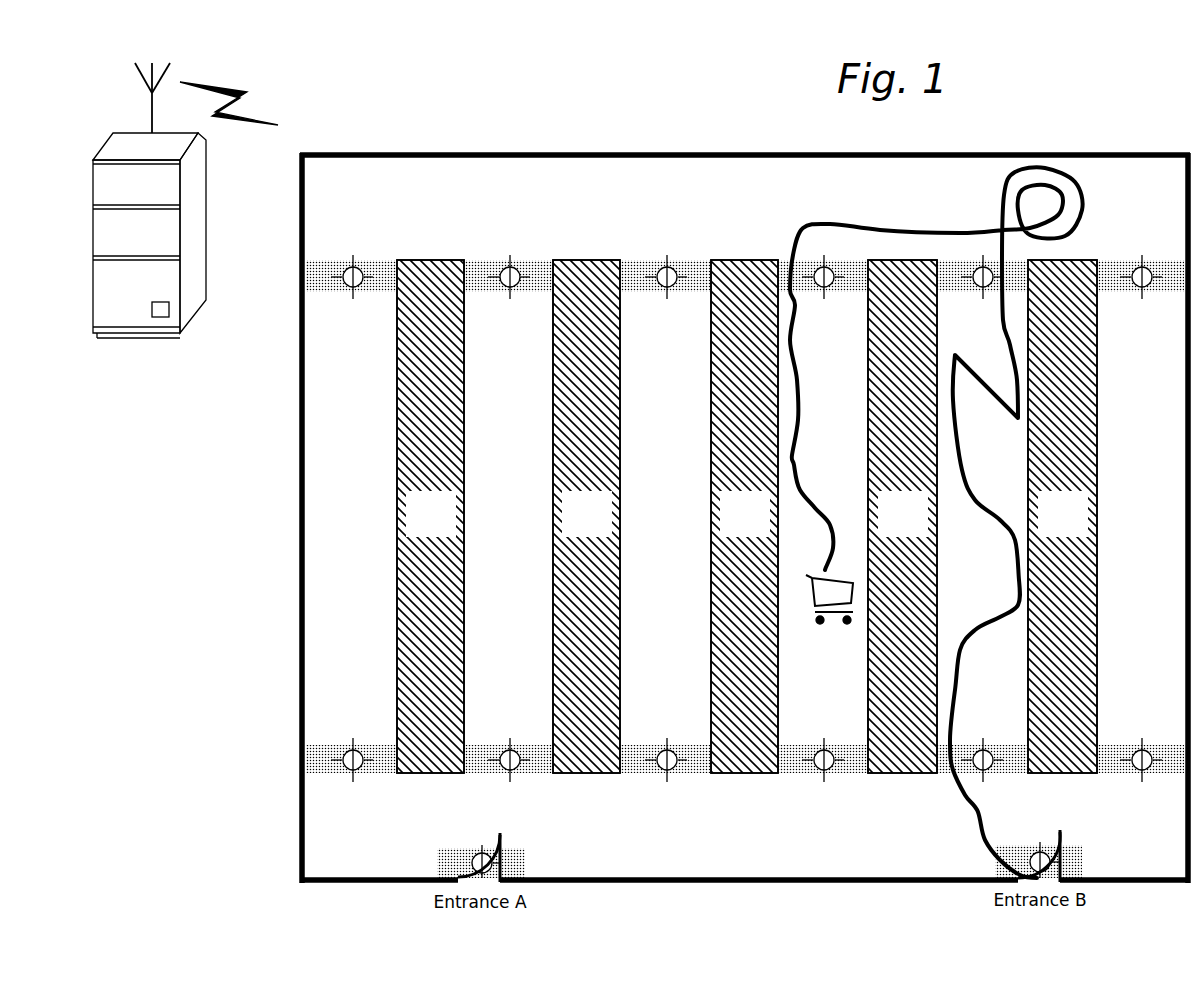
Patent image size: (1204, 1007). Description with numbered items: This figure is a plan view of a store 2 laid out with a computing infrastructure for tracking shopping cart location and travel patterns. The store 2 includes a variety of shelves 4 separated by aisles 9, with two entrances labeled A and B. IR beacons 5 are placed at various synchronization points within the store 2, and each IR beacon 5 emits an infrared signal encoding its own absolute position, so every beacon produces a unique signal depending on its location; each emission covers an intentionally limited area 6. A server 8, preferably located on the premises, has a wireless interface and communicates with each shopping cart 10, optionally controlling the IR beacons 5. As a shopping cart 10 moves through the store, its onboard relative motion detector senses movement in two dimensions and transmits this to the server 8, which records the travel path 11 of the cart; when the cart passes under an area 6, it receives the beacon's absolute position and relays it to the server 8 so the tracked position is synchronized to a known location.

The store 2 is at (300, 623).
The shelves 4 is at (747, 516).
The IR beacon 5 is at (746, 566).
The area 6 is at (745, 569).
The server 8 is at (192, 280).
The aisles 9 is at (744, 511).
The shopping cart 10 is at (829, 599).
The movement path 11 is at (978, 812).